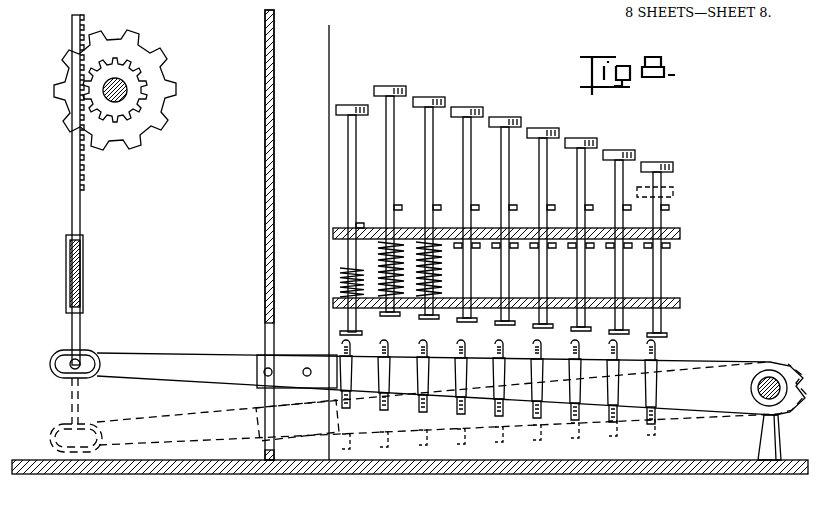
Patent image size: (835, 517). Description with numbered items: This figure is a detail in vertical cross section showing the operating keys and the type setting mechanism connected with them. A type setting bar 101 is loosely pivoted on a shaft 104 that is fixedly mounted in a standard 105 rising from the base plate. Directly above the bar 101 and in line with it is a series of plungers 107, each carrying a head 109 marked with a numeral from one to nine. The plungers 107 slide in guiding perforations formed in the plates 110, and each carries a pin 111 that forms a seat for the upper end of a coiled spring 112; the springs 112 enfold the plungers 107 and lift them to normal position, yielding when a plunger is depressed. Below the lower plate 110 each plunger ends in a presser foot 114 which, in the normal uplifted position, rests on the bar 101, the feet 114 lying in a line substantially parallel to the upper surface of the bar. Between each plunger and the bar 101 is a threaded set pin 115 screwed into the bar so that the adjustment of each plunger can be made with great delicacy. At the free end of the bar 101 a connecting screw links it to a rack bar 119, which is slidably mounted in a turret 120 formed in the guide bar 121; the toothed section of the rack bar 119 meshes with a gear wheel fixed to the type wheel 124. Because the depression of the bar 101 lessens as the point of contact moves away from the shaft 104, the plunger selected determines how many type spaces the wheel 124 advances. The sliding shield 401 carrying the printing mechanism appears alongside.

The type setting bar 101 is at (705, 362).
The shaft 104 is at (752, 389).
The standard 105 is at (766, 440).
The plunger 107 is at (504, 209).
The head 109 is at (622, 151).
The plate 110 is at (680, 303).
The pin 111 is at (668, 247).
The coiled spring 112 is at (441, 275).
The presser foot 114 is at (668, 335).
The set pin 115 is at (422, 352).
The rack bar 119 is at (81, 221).
The turret 120 is at (84, 274).
The guide bar 121 is at (75, 291).
The type wheel 124 is at (158, 80).
The sliding shield 401 is at (265, 237).